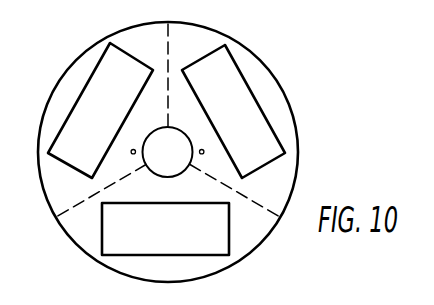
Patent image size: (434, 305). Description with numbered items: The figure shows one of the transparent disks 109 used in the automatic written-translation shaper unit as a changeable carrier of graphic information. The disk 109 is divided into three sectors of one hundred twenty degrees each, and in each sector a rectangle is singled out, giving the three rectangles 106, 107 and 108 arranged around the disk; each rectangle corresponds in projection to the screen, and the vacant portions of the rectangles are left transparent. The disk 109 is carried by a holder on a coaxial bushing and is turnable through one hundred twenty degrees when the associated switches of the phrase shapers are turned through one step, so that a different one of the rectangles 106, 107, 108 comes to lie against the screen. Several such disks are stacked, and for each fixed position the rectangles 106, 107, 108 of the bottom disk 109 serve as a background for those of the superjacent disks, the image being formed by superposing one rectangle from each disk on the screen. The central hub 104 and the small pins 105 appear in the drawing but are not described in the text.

The central hub / shaft 104 is at (167, 169).
The pins 105 is at (136, 151).
The rectangle 106 is at (108, 240).
The rectangle 107 is at (85, 103).
The rectangle 108 is at (265, 145).
The transparent disk 109 is at (204, 36).